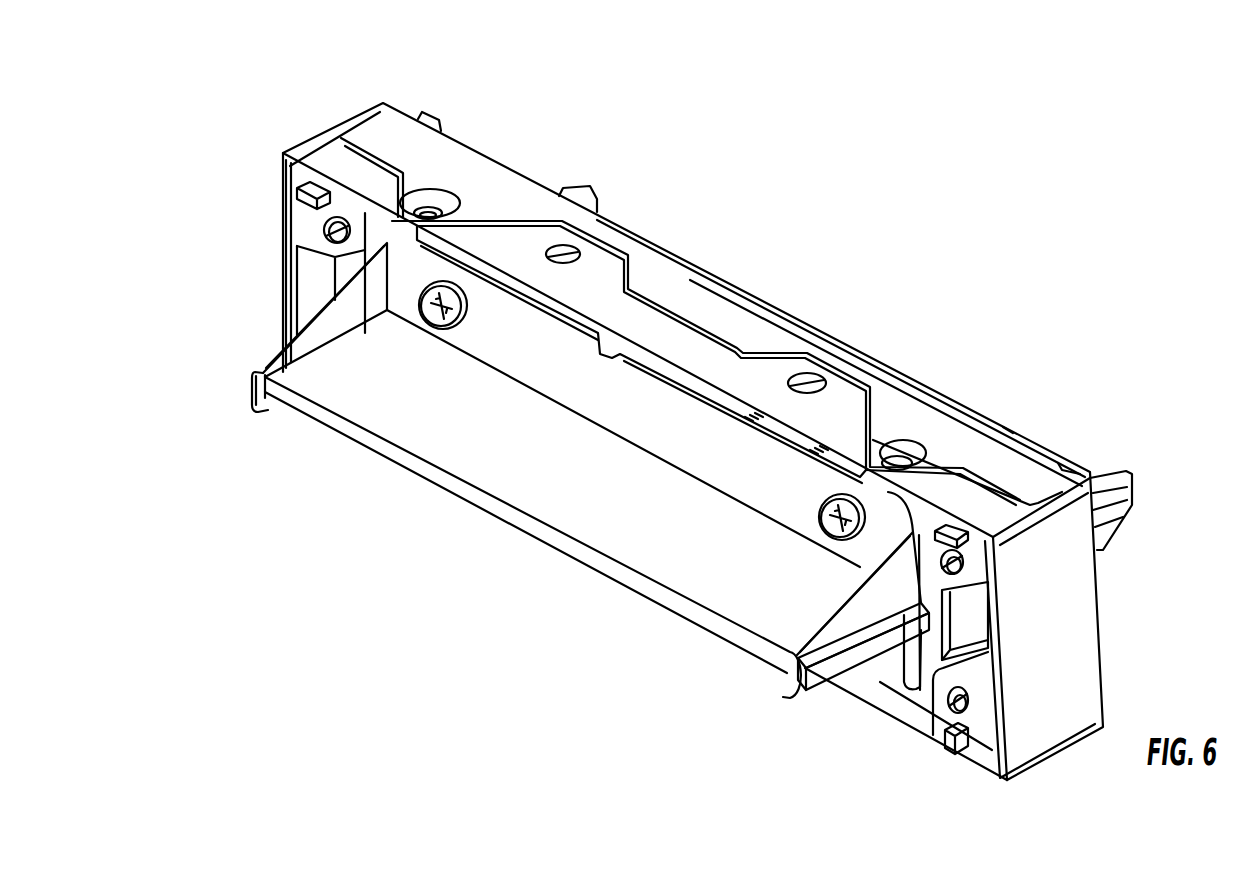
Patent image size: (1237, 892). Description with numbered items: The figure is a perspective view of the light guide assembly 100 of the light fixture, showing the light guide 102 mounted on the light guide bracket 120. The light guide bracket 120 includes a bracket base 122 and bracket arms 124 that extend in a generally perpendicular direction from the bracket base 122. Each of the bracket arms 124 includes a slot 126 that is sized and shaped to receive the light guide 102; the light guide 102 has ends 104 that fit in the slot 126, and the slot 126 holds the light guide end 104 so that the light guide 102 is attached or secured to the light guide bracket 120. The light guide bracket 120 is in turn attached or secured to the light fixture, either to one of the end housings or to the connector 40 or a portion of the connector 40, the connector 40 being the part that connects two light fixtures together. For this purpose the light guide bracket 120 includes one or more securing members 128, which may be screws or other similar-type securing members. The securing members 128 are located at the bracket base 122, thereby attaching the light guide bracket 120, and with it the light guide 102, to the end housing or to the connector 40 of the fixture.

The connector 40 is at (740, 342).
The light guide assembly 100 is at (590, 470).
The light guide 102 is at (393, 410).
The light guide end 104 is at (847, 650).
The light guide bracket 120 is at (634, 395).
The bracket base 122 is at (707, 453).
The bracket arms 124 is at (325, 320).
The slot 126 is at (441, 302).
The securing members 128 is at (840, 510).